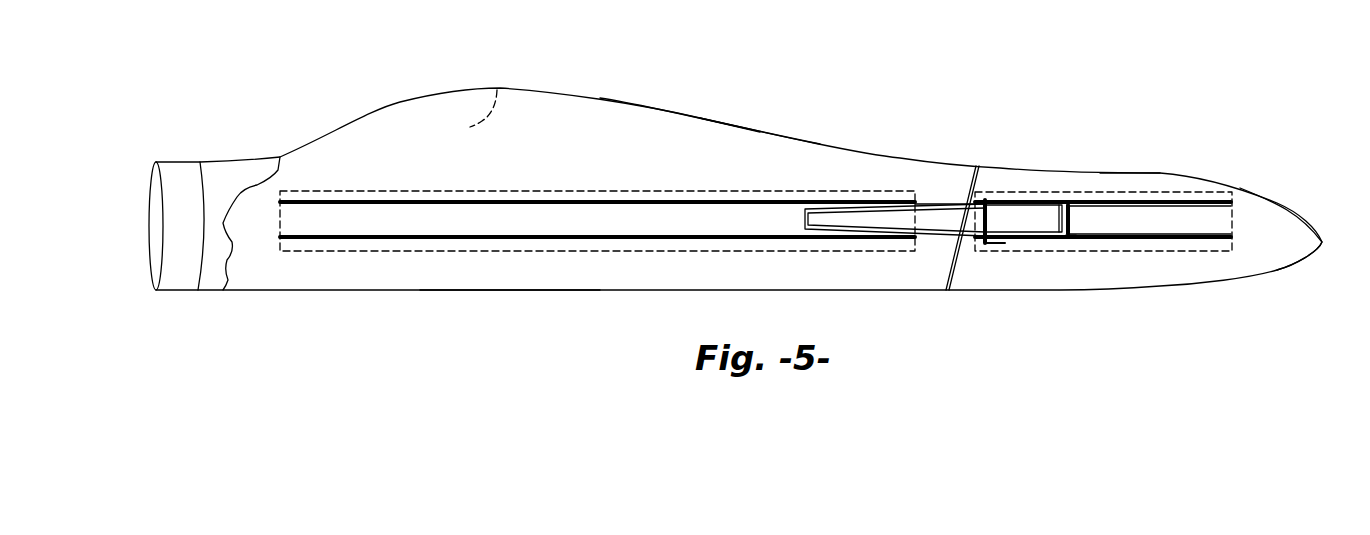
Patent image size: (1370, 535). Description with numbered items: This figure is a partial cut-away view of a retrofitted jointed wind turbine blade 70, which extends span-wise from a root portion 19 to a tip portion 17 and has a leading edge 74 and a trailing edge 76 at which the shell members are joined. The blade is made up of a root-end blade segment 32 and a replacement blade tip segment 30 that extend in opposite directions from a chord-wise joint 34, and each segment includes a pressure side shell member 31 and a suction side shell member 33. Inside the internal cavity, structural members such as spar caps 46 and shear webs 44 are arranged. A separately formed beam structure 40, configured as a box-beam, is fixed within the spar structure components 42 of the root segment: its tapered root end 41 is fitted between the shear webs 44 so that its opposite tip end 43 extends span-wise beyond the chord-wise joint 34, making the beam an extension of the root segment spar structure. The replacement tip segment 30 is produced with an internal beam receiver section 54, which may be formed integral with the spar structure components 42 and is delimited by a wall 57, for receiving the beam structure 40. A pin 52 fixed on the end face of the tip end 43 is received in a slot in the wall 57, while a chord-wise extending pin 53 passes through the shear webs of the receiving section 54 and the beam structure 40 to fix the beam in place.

The tip portion 17 is at (1283, 242).
The root portion 19 is at (217, 227).
The replacement blade tip segment 30 is at (1155, 187).
The pressure side shell member 31 is at (583, 160).
The root-end blade segment 32 is at (638, 128).
The suction side shell member 33 is at (496, 88).
The chord-wise joint 34 is at (947, 290).
The beam structure 40 is at (937, 205).
The root end 41 is at (870, 222).
The spar structure components 42 is at (662, 181).
The tip end 43 is at (1035, 222).
The shear webs 44 is at (443, 238).
The spar caps 46 is at (375, 190).
The pin 52 is at (1070, 222).
The pin 53 is at (992, 222).
The beam receiver section 54 is at (1002, 240).
The wall 57 is at (1075, 238).
The retrofitted jointed blade 70 is at (846, 94).
The leading edge 74 is at (493, 290).
The trailing edge 76 is at (774, 135).